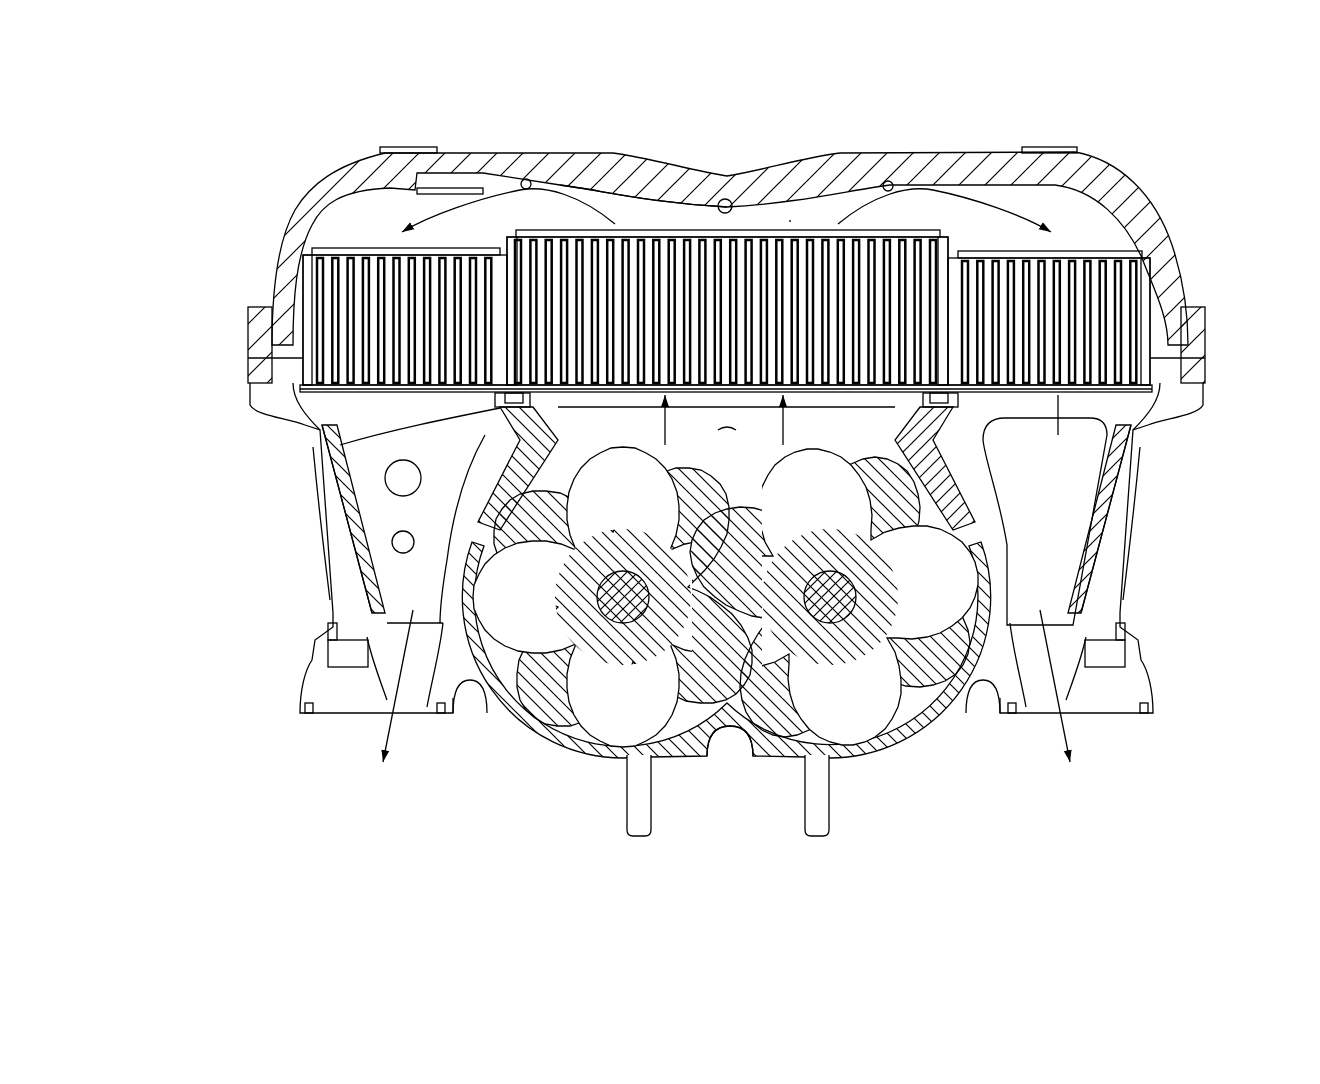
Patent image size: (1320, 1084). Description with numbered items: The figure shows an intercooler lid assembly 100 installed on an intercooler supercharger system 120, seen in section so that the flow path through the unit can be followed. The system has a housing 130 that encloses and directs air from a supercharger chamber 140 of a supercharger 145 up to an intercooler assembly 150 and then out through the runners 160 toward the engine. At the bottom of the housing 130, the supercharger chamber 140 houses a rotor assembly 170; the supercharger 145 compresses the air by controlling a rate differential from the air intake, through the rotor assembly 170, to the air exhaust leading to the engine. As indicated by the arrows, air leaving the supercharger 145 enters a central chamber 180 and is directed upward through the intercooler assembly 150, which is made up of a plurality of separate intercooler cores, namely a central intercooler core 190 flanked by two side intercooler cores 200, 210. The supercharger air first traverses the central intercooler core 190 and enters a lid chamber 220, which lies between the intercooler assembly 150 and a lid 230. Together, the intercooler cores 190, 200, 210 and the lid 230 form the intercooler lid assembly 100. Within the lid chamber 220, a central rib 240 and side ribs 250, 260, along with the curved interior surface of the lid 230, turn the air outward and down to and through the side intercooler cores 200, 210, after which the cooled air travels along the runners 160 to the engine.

The intercooler lid assembly 100 is at (432, 124).
The intercooler supercharger system 120 is at (225, 352).
The housing 130 is at (1162, 432).
The supercharger chamber 140 is at (813, 733).
The supercharger 145 is at (731, 740).
The intercooler assembly 150 is at (1158, 328).
The runners 160 is at (412, 668).
The rotor assembly 170 is at (610, 690).
The central chamber 180 is at (322, 453).
The central intercooler core 190 is at (790, 222).
The side intercooler core 200 is at (345, 246).
The side intercooler core 210 is at (1118, 222).
The lid chamber 220 is at (672, 212).
The lid 230 is at (1100, 156).
The central rib 240 is at (735, 178).
The side rib 250 is at (527, 179).
The side rib 260 is at (889, 181).